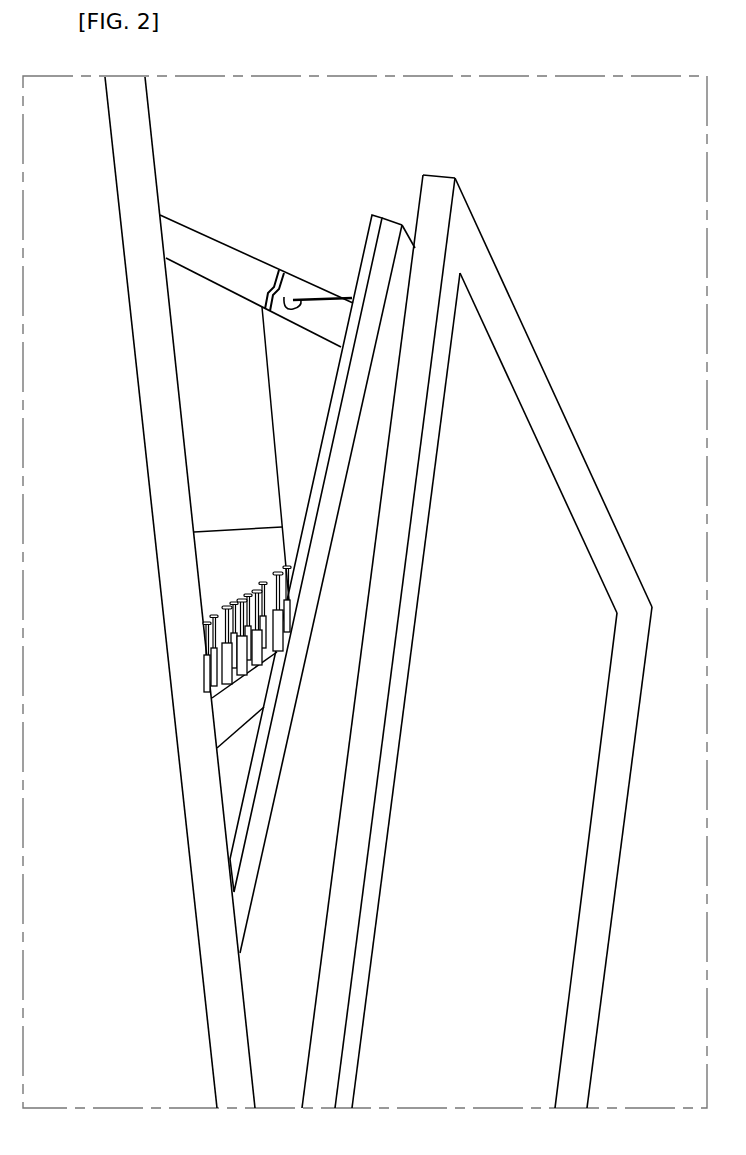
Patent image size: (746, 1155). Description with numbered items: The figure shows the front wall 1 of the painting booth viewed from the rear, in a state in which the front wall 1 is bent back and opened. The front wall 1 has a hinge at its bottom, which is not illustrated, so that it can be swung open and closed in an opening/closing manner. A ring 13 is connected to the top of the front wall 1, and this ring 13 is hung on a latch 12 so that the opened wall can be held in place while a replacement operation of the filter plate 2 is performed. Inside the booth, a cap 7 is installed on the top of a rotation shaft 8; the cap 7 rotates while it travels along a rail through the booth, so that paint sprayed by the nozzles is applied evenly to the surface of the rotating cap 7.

The front wall 1 is at (395, 503).
The filter plate 2 is at (330, 430).
The cap 7 is at (227, 607).
The rotation shaft 8 is at (223, 630).
The latch 12 is at (269, 279).
The ring 13 is at (296, 313).